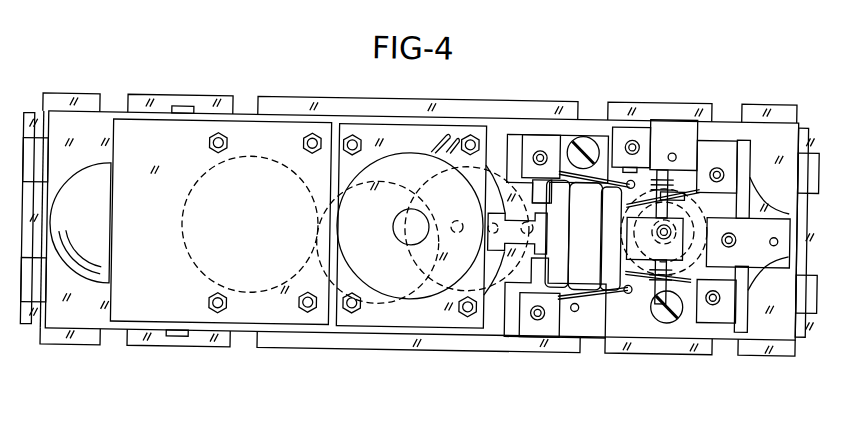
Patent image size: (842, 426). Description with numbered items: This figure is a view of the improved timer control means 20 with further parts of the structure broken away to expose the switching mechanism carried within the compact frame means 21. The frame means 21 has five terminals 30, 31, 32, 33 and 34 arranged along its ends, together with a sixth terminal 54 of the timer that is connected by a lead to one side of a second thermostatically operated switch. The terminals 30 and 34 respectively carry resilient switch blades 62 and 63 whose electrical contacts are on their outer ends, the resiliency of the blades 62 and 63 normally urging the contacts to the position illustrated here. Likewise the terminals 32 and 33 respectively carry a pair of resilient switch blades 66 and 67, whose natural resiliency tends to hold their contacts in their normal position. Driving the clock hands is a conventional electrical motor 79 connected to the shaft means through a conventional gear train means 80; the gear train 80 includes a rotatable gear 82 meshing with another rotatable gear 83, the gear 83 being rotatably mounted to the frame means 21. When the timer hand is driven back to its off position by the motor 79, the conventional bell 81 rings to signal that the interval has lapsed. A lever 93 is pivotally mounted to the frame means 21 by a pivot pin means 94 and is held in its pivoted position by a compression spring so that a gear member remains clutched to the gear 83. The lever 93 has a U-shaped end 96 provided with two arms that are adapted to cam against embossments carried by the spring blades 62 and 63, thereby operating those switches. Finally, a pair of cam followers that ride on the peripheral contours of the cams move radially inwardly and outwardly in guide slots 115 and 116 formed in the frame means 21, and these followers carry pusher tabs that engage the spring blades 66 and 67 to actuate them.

The timer control means 20 is at (270, 58).
The frame means 21 is at (278, 105).
The terminal 30 is at (545, 148).
The terminal 31 is at (628, 124).
The terminal 32 is at (712, 153).
The terminal 33 is at (716, 312).
The terminal 34 is at (540, 323).
The sixth terminal 54 is at (682, 224).
The resilient switch blade 62 is at (621, 182).
The resilient switch blade 63 is at (623, 287).
The resilient switch blade 66 is at (682, 191).
The resilient switch blade 67 is at (675, 321).
The electrical motor 79 is at (436, 295).
The gear train means 80 is at (306, 181).
The bell 81 is at (86, 227).
The rotatable gear 82 is at (379, 306).
The rotatable gear 83 is at (491, 289).
The lever 93 is at (566, 318).
The pivot pin means 94 is at (541, 198).
The U-shaped end 96 is at (594, 294).
The guide slot 115 is at (660, 176).
The guide slot 116 is at (666, 283).